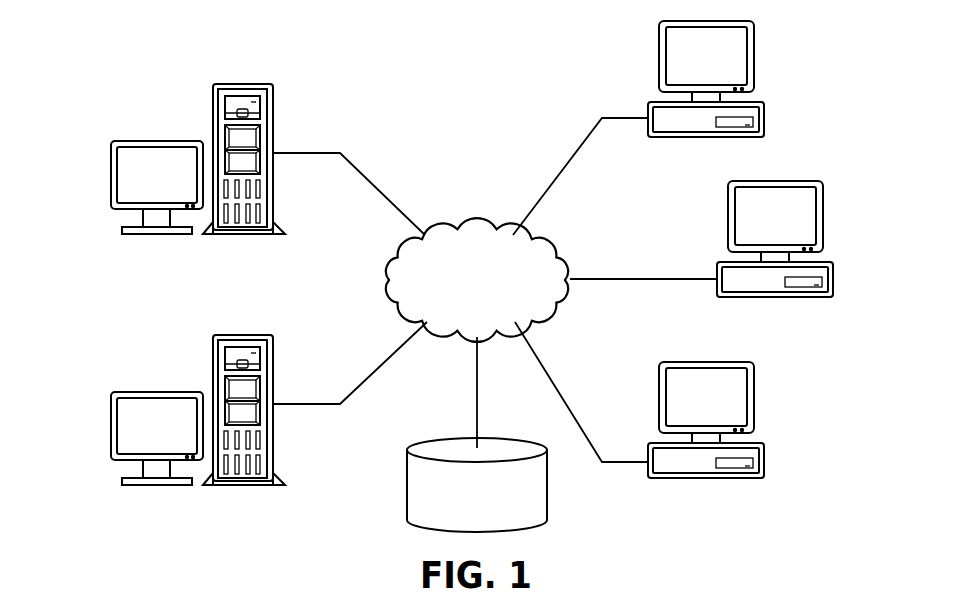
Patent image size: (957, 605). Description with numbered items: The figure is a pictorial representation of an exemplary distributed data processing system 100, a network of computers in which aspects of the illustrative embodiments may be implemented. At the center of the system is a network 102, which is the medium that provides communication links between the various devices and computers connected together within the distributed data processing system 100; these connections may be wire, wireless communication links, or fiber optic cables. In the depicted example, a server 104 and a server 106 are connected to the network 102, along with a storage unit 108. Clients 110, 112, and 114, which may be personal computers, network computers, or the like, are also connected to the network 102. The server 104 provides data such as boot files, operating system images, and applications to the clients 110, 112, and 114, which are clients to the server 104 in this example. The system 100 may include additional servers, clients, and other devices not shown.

The distributed data processing system 100 is at (343, 63).
The network 102 is at (450, 225).
The server 104 is at (111, 175).
The server 106 is at (110, 425).
The storage unit 108 is at (407, 483).
The client 110 is at (764, 110).
The client 112 is at (833, 288).
The client 114 is at (764, 470).